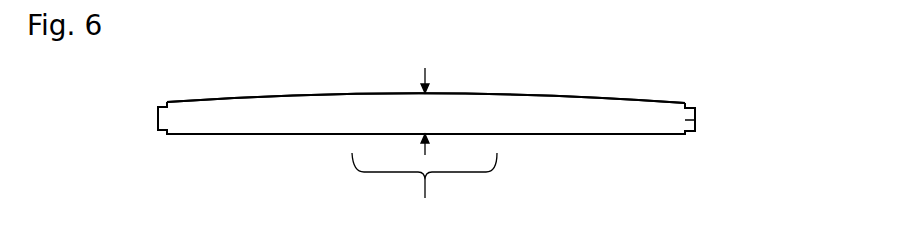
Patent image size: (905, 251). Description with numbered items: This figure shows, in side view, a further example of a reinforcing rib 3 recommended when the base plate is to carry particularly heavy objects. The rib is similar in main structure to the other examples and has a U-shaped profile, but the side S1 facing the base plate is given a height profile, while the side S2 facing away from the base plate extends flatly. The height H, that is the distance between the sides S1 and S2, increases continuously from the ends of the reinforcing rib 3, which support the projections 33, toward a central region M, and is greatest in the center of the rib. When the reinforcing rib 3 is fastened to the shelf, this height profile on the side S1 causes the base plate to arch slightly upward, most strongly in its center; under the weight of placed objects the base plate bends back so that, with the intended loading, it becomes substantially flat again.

The reinforcing rib 3 is at (347, 134).
The projections 33 is at (695, 120).
The side facing the base plate S1 is at (569, 94).
The side facing away from the base plate S2 is at (527, 138).
The height H is at (425, 68).
The central region M is at (424, 182).